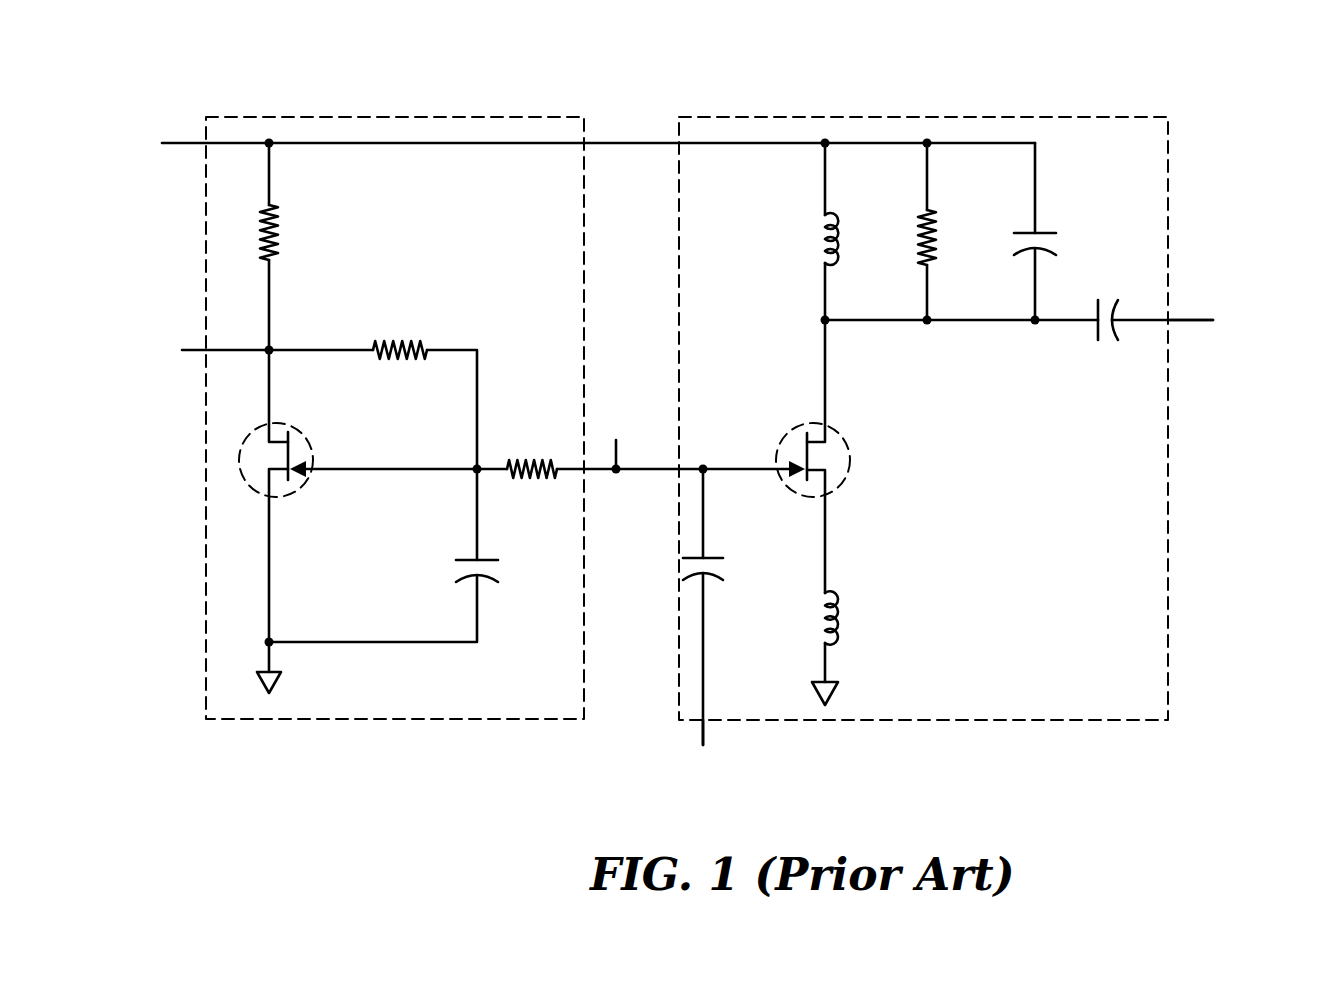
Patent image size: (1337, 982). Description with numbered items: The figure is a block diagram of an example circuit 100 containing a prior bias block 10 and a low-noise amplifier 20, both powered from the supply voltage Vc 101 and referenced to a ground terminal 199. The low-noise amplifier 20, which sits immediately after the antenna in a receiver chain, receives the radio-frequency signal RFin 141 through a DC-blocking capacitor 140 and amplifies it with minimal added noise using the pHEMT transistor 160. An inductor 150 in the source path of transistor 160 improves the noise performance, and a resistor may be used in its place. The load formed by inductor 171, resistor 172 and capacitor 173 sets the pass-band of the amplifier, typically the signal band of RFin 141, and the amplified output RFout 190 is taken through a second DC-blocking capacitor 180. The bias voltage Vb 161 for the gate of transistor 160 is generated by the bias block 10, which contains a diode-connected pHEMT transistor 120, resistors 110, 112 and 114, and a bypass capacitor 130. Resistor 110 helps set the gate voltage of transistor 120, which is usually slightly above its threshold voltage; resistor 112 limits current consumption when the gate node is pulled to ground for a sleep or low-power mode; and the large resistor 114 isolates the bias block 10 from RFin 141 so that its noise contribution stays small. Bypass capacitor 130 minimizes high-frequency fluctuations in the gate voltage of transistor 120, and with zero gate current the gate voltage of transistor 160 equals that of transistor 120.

The circuit 100 is at (540, 83).
The prior bias block 10 is at (556, 714).
The low-noise amplifier 20 is at (1131, 712).
The power supply voltage 101 is at (178, 143).
The resistor 110 is at (285, 232).
The resistor 112 is at (400, 336).
The resistor 114 is at (522, 454).
The pHEMT transistor 120 is at (262, 494).
The bypass capacitor 130 is at (490, 558).
The DC-blocking capacitor 140 is at (716, 570).
The signal RFin 141 is at (703, 727).
The inductor 150 is at (843, 606).
The pHEMT transistor 160 is at (845, 439).
The bias voltage Vb 161 is at (646, 434).
The inductor 171 is at (845, 233).
The resistor 172 is at (940, 233).
The capacitor 173 is at (1043, 233).
The DC-blocking capacitor 180 is at (1108, 300).
The RFout 190 is at (1188, 320).
The ground terminal 199 is at (277, 678).